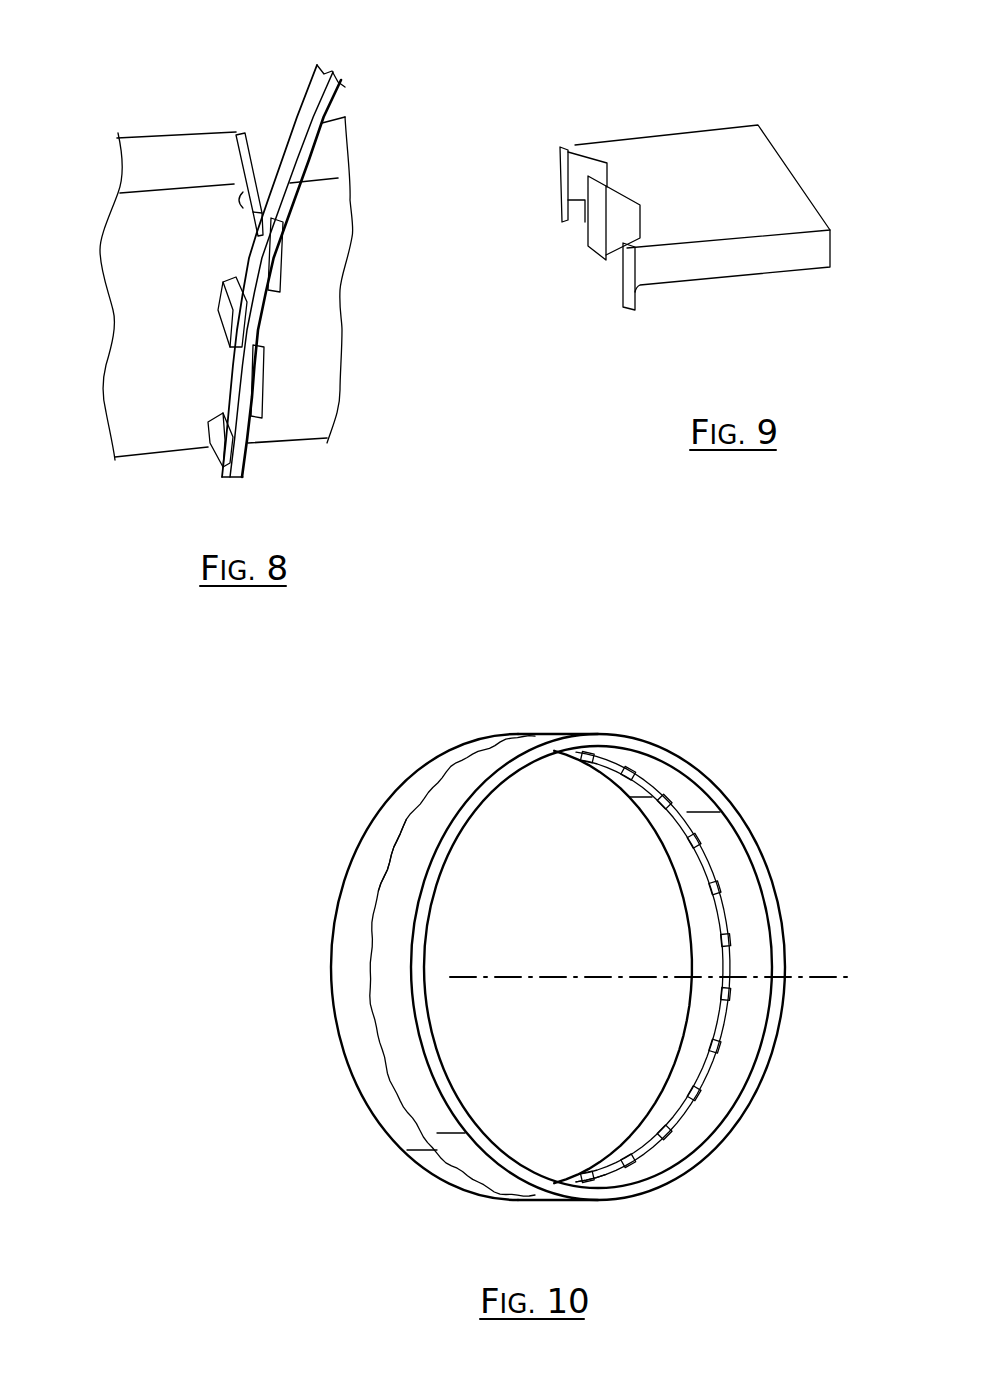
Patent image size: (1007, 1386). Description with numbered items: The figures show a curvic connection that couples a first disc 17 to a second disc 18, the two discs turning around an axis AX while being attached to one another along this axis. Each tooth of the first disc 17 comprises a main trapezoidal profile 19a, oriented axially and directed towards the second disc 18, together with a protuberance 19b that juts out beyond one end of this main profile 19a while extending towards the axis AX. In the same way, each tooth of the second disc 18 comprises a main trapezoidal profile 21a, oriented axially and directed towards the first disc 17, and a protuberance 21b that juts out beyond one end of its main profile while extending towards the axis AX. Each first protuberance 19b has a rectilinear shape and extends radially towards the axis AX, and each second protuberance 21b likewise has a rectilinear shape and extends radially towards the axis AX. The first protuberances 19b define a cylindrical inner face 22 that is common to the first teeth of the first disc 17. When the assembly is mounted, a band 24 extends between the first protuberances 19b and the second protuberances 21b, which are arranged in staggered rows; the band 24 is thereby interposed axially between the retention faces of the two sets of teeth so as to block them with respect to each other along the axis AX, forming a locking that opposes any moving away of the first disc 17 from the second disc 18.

In FIG. 8, the first disc 17 is at (137, 168).
In FIG. 10, the first disc 17 is at (353, 947).
In FIG. 8, the second disc 18 is at (332, 145).
In FIG. 9, the second disc 18 is at (773, 177).
In FIG. 10, the second disc 18 is at (757, 923).
In FIG. 10, the main trapezoidal profile 19a is at (433, 787).
In FIG. 8, the protuberance 19b is at (277, 268).
In FIG. 10, the protuberance 19b is at (680, 1105).
In FIG. 9, the main trapezoidal profile 21a is at (642, 208).
In FIG. 10, the main trapezoidal profile 21a is at (388, 892).
In FIG. 8, the protuberance 21b is at (250, 213).
In FIG. 9, the protuberance 21b is at (628, 297).
In FIG. 10, the protuberance 21b is at (640, 1158).
In FIG. 10, the cylindrical inner face 22 is at (700, 1075).
In FIG. 8, the band 24 is at (303, 103).
In FIG. 10, the axis AX is at (537, 977).